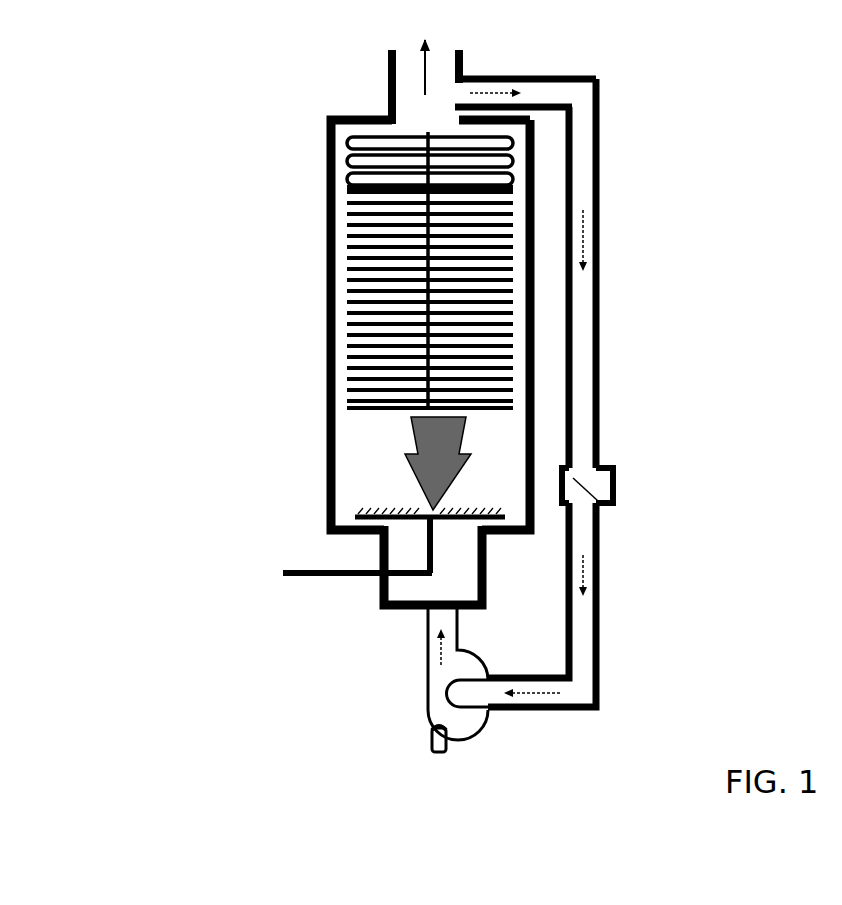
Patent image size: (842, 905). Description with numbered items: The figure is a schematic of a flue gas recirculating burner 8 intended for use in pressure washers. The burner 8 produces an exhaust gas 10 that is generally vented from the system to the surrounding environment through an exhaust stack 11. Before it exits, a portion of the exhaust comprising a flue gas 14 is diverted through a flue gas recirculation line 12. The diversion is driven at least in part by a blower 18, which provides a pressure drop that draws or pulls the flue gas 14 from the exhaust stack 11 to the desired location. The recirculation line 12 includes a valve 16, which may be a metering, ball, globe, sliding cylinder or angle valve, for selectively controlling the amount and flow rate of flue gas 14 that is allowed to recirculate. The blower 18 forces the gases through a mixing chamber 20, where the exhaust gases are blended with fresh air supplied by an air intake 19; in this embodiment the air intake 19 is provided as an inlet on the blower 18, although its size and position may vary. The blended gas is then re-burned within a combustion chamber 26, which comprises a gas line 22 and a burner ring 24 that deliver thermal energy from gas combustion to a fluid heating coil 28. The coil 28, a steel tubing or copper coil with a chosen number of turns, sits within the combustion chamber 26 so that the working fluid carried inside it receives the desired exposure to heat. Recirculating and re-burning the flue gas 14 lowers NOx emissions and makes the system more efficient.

The flue gas recirculating burner 8 is at (183, 263).
The exhaust gas 10 is at (415, 42).
The exhaust stack 11 is at (465, 62).
The flue gas recirculation line 12 is at (610, 242).
The flue gas 14 is at (493, 86).
The valve 16 is at (591, 480).
The blower 18 is at (426, 697).
The air intake 19 is at (421, 750).
The mixing chamber 20 is at (430, 590).
The gas line 22 is at (335, 556).
The burner ring 24 is at (362, 508).
The combustion chamber 26 is at (321, 332).
The fluid heating coil 28 is at (350, 223).